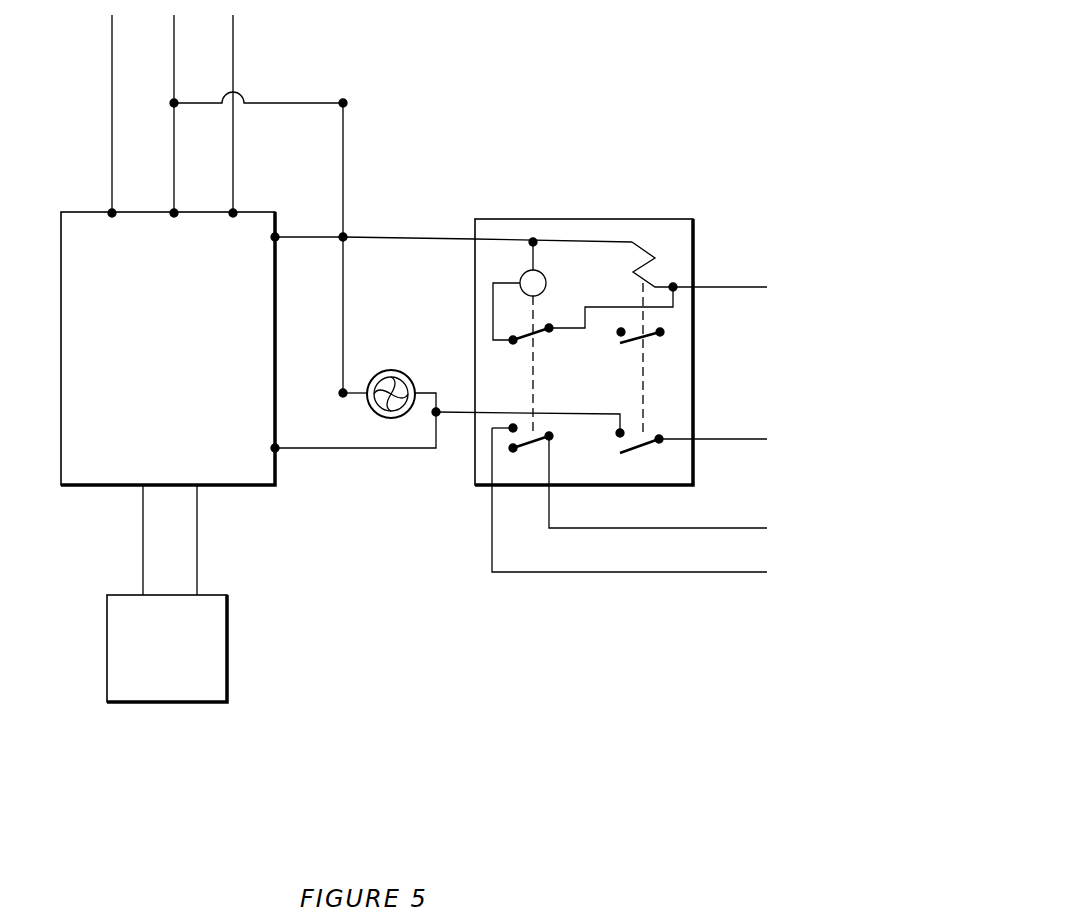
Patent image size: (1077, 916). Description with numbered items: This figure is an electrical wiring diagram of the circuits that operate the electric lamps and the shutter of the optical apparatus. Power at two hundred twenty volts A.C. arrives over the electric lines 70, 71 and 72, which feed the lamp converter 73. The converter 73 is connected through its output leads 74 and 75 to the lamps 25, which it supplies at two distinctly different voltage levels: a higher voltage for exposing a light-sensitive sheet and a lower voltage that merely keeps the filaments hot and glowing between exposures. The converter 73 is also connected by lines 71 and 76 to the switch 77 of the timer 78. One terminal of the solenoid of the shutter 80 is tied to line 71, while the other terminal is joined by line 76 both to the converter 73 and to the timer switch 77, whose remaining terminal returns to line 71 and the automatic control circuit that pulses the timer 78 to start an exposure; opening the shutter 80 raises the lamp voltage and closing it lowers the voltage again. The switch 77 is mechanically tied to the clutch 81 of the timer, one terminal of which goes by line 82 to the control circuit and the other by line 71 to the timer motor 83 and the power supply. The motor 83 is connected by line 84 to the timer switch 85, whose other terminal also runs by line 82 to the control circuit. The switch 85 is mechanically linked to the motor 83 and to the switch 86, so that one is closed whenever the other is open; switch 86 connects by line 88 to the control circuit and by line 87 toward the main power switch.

The lamps 25 is at (157, 682).
The electric line 70 is at (111, 62).
The electric line 71 is at (173, 63).
The electric line 72 is at (234, 40).
The lamp converter 73 is at (61, 340).
The lamp lead 74 is at (142, 536).
The lamp lead 75 is at (198, 548).
The line 76 is at (385, 450).
The switch 77 is at (648, 433).
The timer 78 is at (693, 366).
The shutter 80 is at (395, 370).
The clutch 81 is at (653, 253).
The line 82 is at (593, 307).
The motor 83 is at (520, 276).
The line 84 is at (493, 306).
The switch 85 is at (540, 333).
The switch 86 is at (527, 445).
The line 87 is at (607, 573).
The line 88 is at (735, 528).